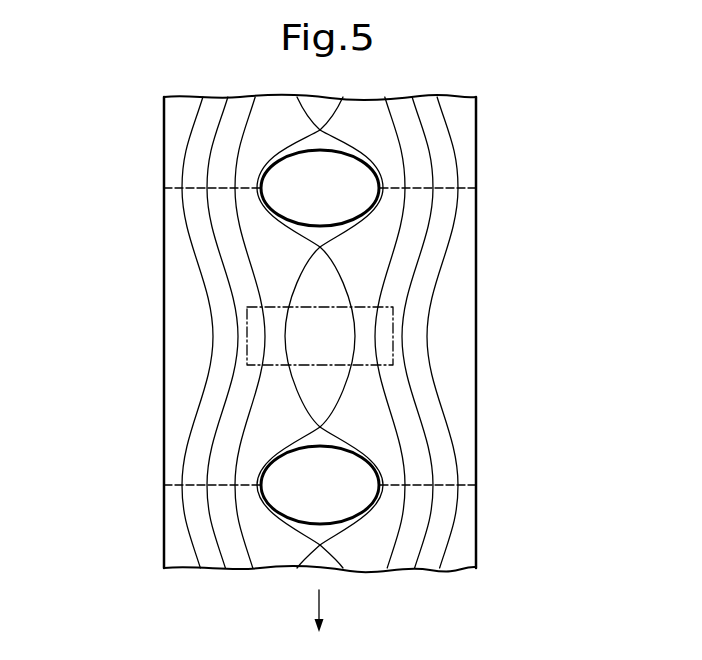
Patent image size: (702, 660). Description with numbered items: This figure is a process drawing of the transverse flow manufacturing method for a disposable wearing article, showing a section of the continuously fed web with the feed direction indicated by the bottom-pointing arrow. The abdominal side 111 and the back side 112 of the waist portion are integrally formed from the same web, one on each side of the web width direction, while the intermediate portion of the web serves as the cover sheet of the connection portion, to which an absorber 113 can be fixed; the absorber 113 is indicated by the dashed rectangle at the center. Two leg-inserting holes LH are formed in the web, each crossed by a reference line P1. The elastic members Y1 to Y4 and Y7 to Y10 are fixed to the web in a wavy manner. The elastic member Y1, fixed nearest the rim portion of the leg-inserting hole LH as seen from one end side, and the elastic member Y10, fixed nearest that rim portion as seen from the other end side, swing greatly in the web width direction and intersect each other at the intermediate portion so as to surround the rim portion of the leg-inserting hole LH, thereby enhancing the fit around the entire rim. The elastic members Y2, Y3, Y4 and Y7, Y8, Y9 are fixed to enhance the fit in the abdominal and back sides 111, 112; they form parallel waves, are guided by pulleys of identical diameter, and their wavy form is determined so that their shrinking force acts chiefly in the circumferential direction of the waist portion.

The abdominal side of the waist portion 111 is at (180, 338).
The back side of the waist portion 112 is at (452, 332).
The absorber 113 is at (383, 303).
The reference line P1 is at (442, 188).
The leg-inserting hole LH is at (338, 224).
The elastic member Y1 is at (381, 463).
The elastic member Y2 is at (403, 506).
The elastic member Y3 is at (428, 532).
The elastic member Y4 is at (447, 558).
The elastic member Y7 is at (190, 556).
The elastic member Y8 is at (207, 530).
The elastic member Y9 is at (232, 500).
The elastic member Y10 is at (260, 463).